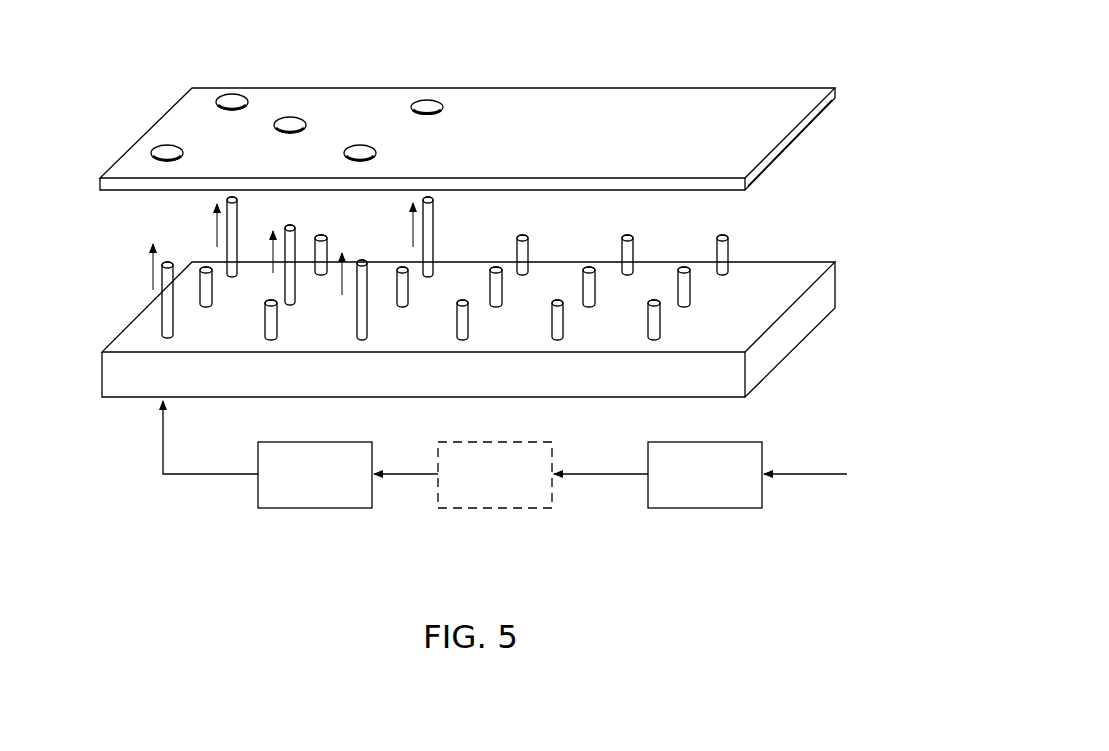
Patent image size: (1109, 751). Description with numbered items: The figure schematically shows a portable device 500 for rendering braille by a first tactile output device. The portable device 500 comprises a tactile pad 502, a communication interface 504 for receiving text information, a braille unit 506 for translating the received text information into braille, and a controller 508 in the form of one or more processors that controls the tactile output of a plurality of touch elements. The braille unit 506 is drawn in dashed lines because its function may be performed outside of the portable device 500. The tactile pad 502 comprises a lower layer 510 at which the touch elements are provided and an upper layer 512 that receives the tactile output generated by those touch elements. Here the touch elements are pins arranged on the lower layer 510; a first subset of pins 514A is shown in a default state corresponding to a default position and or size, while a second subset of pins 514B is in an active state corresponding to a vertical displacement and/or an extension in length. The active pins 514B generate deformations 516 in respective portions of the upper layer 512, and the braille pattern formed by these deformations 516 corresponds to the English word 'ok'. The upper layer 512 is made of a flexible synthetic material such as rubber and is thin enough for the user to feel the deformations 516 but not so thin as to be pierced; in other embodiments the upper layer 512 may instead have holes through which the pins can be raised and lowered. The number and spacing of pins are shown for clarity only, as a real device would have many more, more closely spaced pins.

The portable device 500 is at (120, 66).
The tactile pad 502 is at (850, 86).
The communication interface 504 is at (720, 510).
The braille unit 506 is at (480, 510).
The controller 508 is at (292, 510).
The lower layer 510 is at (767, 261).
The upper layer 512 is at (732, 100).
The first subset of pins 514A is at (203, 266).
The second subset of pins 514B is at (160, 322).
The deformations 516 is at (232, 96).